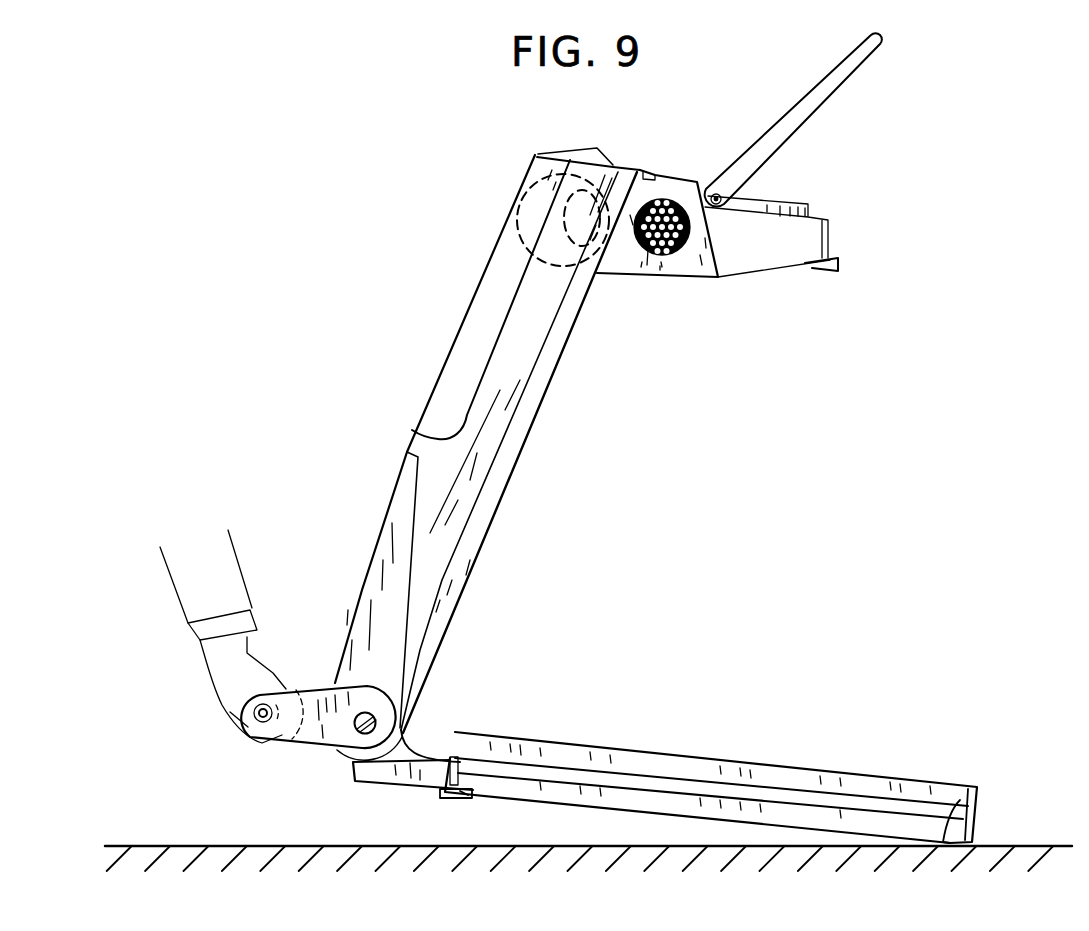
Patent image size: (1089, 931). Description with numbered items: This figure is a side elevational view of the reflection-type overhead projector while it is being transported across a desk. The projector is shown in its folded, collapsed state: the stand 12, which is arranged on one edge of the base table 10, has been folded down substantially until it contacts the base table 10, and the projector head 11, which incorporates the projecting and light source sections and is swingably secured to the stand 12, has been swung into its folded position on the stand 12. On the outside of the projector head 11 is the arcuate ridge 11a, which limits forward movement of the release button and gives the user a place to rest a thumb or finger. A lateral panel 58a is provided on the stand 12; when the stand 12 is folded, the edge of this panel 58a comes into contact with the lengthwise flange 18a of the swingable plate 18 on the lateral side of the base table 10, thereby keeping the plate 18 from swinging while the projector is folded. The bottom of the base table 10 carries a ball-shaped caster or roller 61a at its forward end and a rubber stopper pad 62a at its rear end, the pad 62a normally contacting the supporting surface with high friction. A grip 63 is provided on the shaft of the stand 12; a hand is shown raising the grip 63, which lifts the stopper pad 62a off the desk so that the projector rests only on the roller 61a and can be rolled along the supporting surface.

The base table 10 is at (355, 767).
The projector head 11 is at (673, 177).
The arcuate ridge 11a is at (525, 192).
The stand 12 is at (492, 257).
The swingable plate 18 is at (648, 790).
The lengthwise flange 18a is at (777, 765).
The lateral panel 58a is at (490, 410).
The ball-shaped caster or roller 61a is at (978, 792).
The stopper pad 62a is at (450, 800).
The grip 63 is at (267, 693).